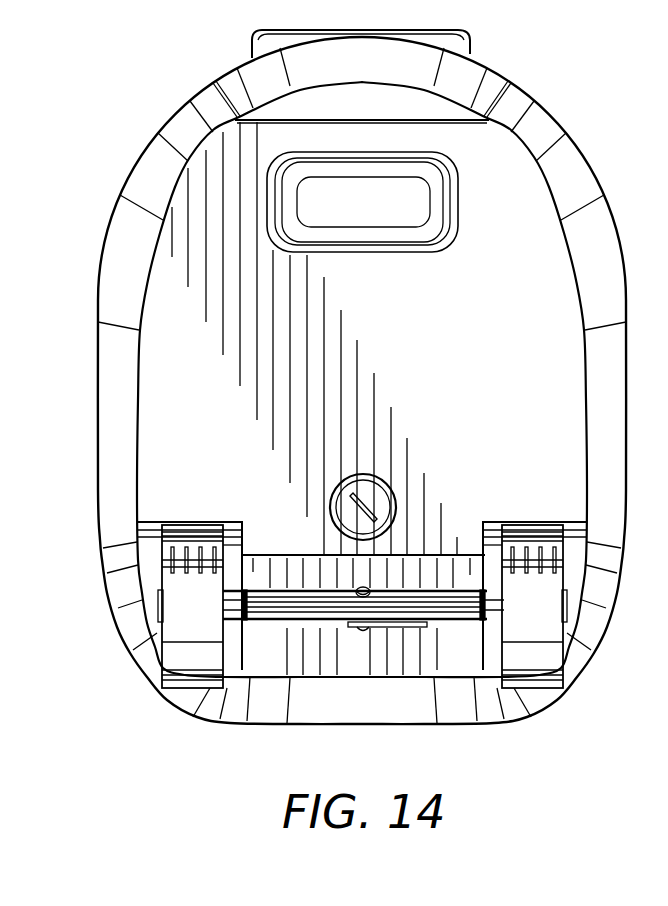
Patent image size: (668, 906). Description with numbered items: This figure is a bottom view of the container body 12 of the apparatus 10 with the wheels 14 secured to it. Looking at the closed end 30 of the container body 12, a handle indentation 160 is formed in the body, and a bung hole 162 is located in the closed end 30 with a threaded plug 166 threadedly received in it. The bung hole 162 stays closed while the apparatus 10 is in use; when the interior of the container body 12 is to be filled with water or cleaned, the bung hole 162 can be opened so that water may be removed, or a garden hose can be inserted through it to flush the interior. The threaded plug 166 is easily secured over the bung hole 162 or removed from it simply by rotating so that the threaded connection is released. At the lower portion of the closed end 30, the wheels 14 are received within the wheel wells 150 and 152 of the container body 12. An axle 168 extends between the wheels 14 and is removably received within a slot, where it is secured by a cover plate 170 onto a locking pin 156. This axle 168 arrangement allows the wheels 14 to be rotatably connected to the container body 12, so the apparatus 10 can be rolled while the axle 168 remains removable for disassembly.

The apparatus 10 is at (161, 78).
The container body 12 is at (540, 127).
The wheels 14 is at (172, 675).
The closed end 30 is at (390, 364).
The wheel well 150 is at (237, 522).
The wheel well 152 is at (488, 522).
The locking pin 156 is at (368, 590).
The handle indentation 160 is at (425, 230).
The bung hole 162 is at (350, 518).
The threaded plug 166 is at (365, 490).
The axle 168 is at (342, 607).
The cover plate 170 is at (457, 617).